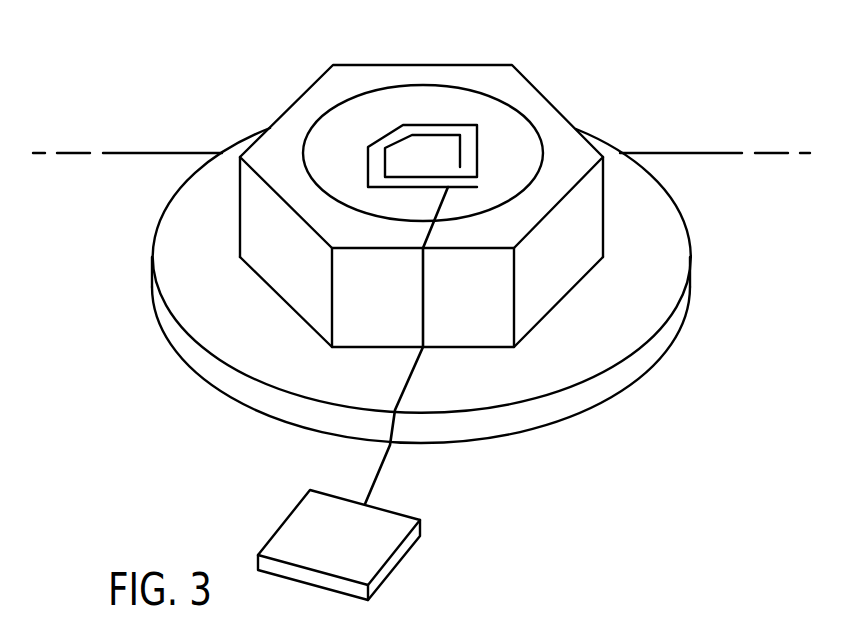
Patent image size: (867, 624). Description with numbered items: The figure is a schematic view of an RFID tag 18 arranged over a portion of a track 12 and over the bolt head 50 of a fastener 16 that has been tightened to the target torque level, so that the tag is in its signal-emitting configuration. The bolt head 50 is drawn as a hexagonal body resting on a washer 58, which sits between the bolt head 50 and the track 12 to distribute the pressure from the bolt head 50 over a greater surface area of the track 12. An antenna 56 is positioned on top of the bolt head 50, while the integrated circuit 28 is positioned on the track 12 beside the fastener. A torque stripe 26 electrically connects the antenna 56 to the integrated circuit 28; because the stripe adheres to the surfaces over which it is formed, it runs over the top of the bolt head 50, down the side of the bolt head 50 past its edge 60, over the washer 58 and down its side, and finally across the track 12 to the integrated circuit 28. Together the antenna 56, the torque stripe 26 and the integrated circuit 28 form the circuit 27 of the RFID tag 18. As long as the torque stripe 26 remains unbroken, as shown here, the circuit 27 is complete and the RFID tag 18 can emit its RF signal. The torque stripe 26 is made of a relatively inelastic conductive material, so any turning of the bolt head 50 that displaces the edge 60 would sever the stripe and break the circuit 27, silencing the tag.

The track 12 is at (710, 153).
The fastener 16 is at (456, 228).
The RFID tag 18 is at (456, 228).
The torque stripe 26 is at (428, 322).
The circuit 27 is at (456, 228).
The integrated circuit 28 is at (303, 513).
The bolt head 50 is at (533, 86).
The antenna 56 is at (478, 148).
The washer 58 is at (684, 224).
The edge 60 is at (489, 323).